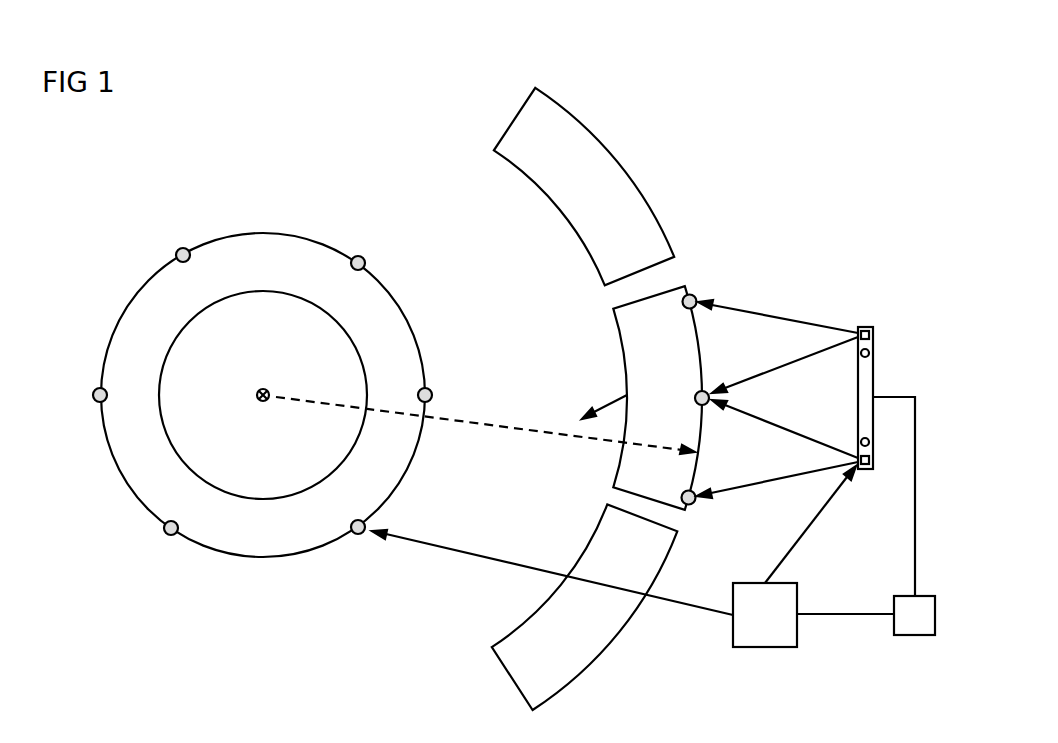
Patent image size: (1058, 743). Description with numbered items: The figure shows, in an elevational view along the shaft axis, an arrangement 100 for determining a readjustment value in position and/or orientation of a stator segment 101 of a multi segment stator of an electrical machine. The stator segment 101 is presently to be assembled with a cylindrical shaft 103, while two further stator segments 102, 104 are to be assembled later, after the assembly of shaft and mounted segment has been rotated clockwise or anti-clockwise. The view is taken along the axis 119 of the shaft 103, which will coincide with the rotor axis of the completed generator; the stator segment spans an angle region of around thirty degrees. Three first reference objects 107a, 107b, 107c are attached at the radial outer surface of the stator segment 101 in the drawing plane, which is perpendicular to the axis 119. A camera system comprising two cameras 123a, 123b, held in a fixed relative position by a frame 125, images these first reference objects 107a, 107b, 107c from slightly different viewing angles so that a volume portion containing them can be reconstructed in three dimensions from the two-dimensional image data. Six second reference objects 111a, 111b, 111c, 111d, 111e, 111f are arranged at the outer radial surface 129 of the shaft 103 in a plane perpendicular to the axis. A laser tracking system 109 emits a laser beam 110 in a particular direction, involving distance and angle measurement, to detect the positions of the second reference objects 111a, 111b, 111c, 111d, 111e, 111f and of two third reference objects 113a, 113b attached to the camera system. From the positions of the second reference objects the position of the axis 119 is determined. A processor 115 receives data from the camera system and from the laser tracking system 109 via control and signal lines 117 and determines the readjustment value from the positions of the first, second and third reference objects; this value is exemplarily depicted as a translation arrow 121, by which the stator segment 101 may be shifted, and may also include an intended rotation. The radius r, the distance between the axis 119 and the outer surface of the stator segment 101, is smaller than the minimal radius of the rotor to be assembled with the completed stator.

The arrangement 100 is at (848, 170).
The stator segment 101 is at (630, 328).
The stator segment 102 is at (565, 208).
The shaft 103 is at (268, 232).
The stator segment 104 is at (553, 680).
The first reference object 107a is at (697, 293).
The first reference object 107b is at (710, 390).
The first reference object 107c is at (695, 510).
The laser tracking system 109 is at (762, 648).
The laser beam 110 is at (683, 608).
The second reference object 111a is at (357, 536).
The second reference object 111b is at (433, 395).
The second reference object 111c is at (362, 257).
The second reference object 111d is at (180, 248).
The second reference object 111e is at (95, 401).
The second reference object 111f is at (167, 537).
The third reference object 113a is at (858, 435).
The third reference object 113b is at (876, 353).
The processor 115 is at (914, 637).
The control and signal lines 117 is at (850, 616).
The axis 119 is at (263, 384).
The translation arrow 121 is at (606, 402).
The camera 123a is at (870, 470).
The camera 123b is at (876, 335).
The frame 125 is at (856, 392).
The outer radial surface 129 is at (400, 299).
The radius r is at (528, 440).